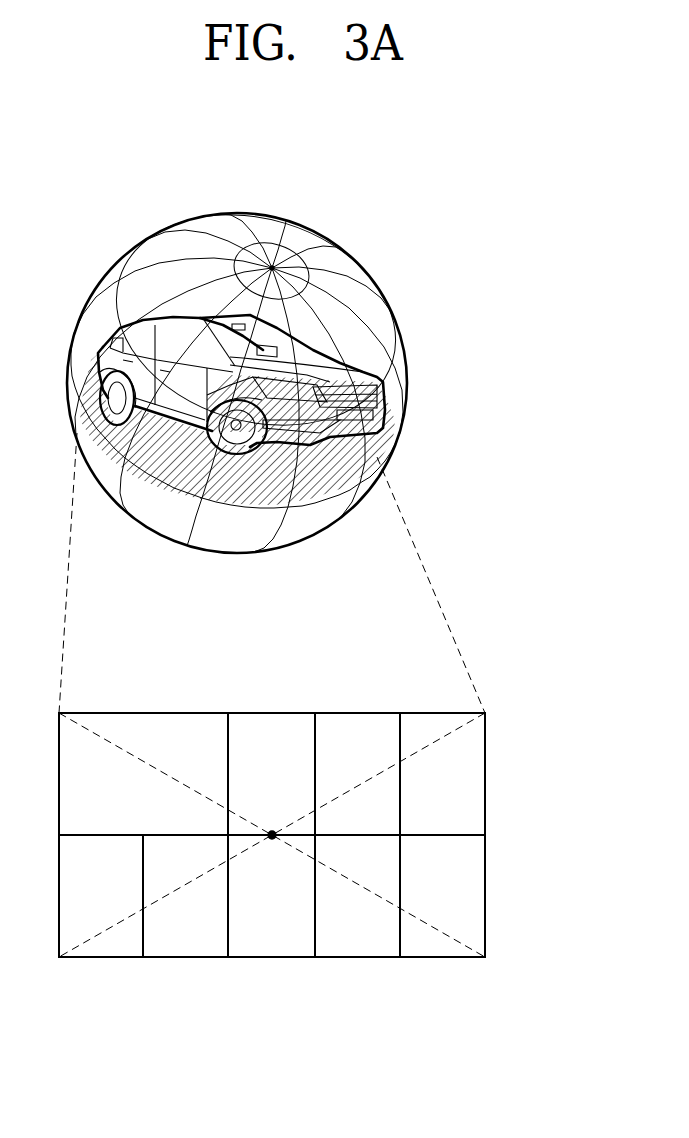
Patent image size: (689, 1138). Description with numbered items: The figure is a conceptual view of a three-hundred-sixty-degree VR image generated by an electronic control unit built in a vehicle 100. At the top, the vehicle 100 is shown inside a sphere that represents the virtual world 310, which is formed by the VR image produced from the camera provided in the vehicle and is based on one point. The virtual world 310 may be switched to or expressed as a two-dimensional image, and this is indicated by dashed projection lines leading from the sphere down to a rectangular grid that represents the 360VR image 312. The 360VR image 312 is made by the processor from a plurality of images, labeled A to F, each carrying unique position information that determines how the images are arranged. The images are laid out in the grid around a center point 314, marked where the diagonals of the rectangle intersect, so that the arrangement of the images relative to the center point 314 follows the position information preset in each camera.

The vehicle 100 is at (125, 293).
The virtual world 310 is at (382, 288).
The 360VR image 312 is at (485, 773).
The center point 314 is at (272, 835).